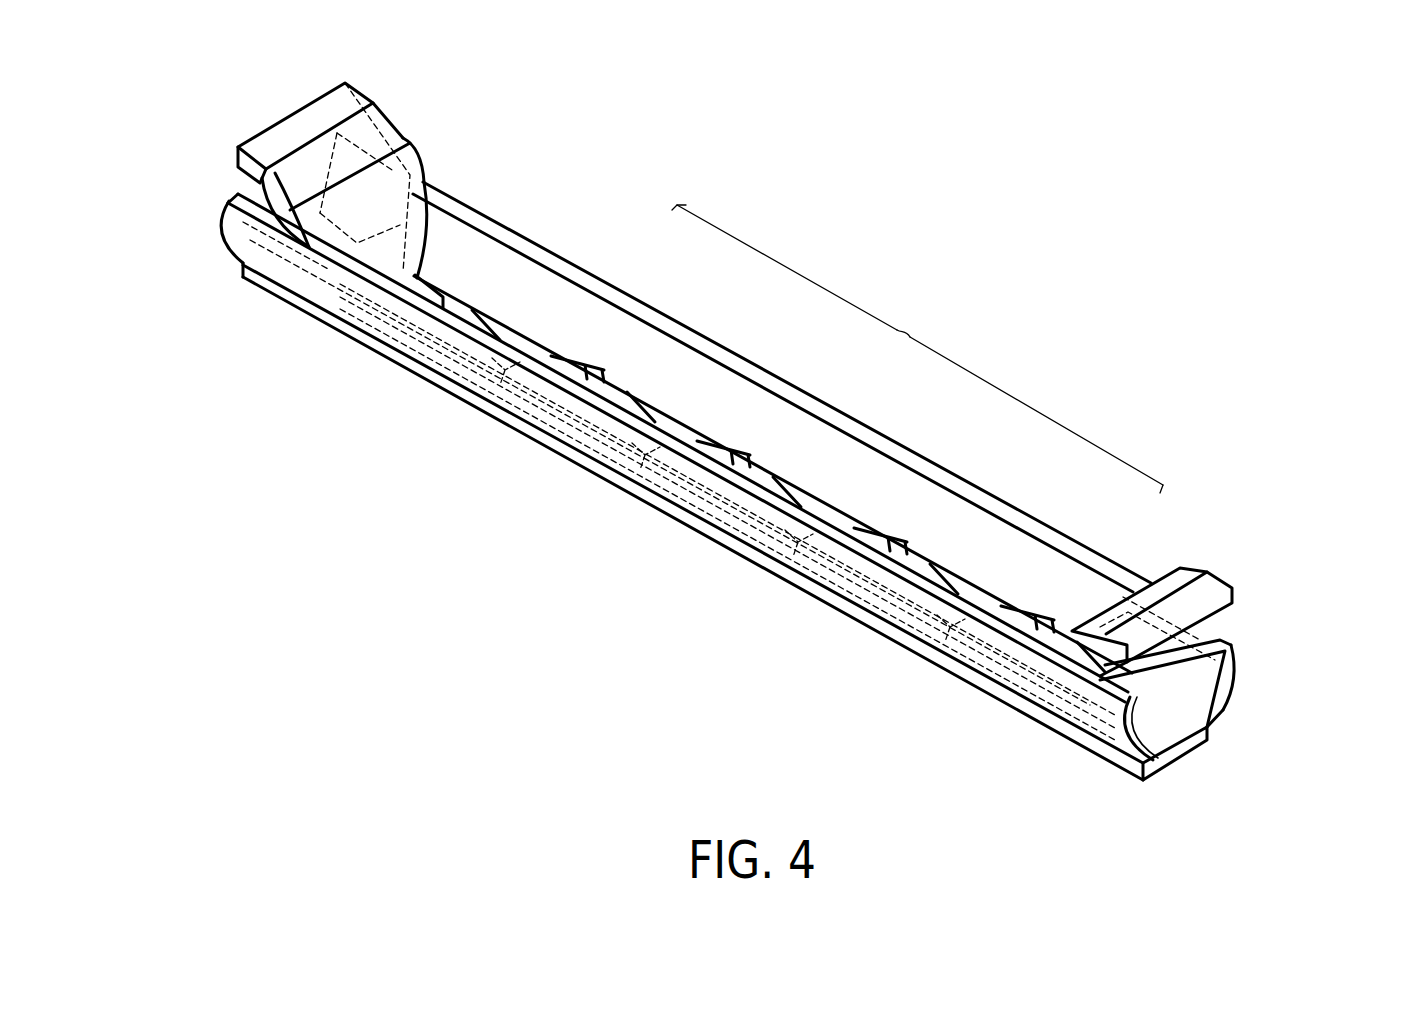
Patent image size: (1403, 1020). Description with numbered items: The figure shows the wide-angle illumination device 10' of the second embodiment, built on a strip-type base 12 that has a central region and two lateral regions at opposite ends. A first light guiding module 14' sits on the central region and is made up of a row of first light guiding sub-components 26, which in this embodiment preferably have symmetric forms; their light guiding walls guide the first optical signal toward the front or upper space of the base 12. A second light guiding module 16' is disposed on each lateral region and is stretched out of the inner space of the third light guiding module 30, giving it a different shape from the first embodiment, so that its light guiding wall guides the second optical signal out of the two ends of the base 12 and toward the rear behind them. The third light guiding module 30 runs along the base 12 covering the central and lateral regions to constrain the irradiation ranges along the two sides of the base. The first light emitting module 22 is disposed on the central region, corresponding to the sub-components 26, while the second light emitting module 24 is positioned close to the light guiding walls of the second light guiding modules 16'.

The wide-angle illumination device 10' is at (1176, 141).
The base 12 is at (1180, 753).
The first light guiding module 14' is at (917, 349).
The second light guiding module 16' is at (806, 359).
The first light emitting module 22 is at (508, 366).
The second light emitting module 24 is at (350, 270).
The first light guiding sub-component 26 is at (477, 313).
The third light guiding module 30 is at (517, 267).